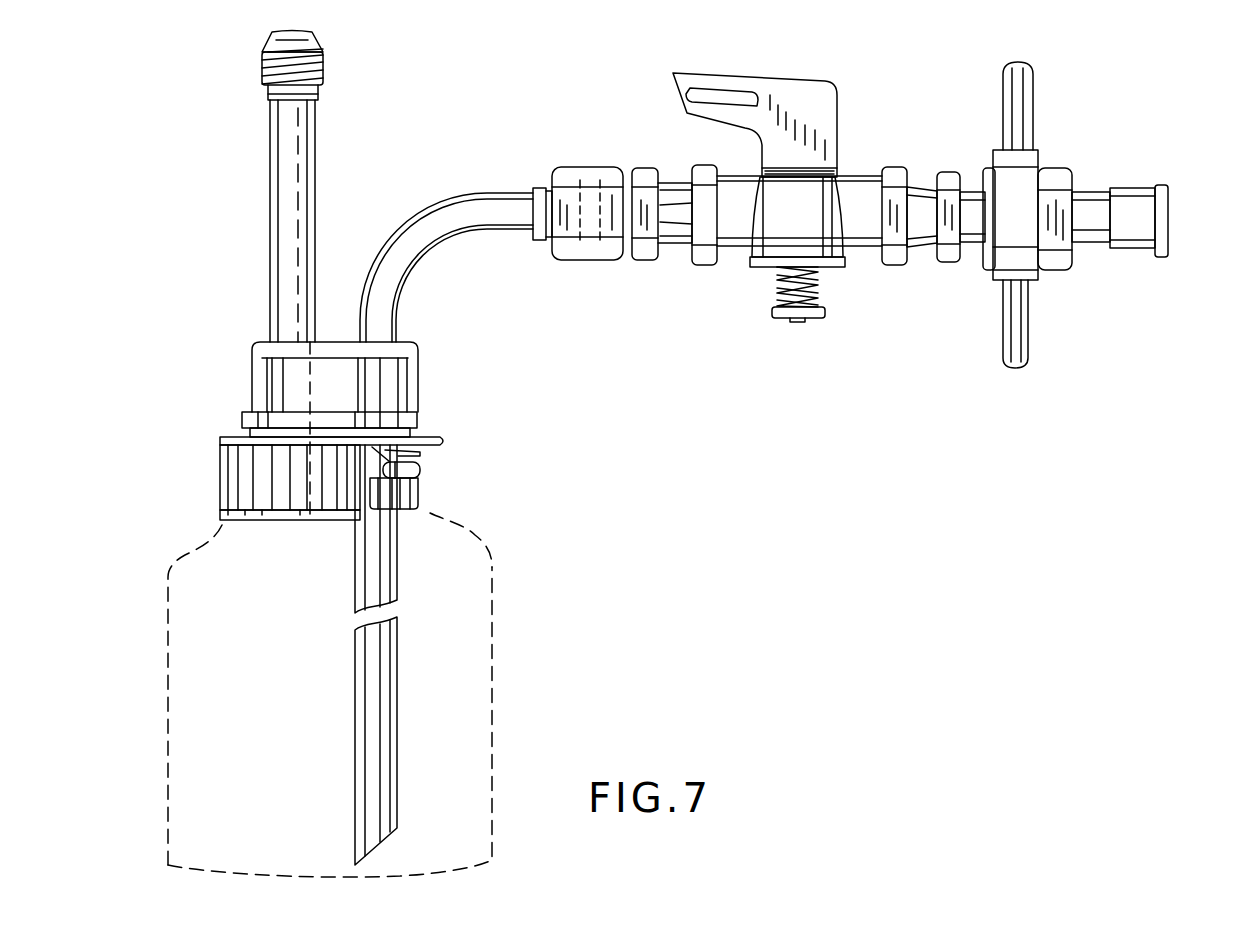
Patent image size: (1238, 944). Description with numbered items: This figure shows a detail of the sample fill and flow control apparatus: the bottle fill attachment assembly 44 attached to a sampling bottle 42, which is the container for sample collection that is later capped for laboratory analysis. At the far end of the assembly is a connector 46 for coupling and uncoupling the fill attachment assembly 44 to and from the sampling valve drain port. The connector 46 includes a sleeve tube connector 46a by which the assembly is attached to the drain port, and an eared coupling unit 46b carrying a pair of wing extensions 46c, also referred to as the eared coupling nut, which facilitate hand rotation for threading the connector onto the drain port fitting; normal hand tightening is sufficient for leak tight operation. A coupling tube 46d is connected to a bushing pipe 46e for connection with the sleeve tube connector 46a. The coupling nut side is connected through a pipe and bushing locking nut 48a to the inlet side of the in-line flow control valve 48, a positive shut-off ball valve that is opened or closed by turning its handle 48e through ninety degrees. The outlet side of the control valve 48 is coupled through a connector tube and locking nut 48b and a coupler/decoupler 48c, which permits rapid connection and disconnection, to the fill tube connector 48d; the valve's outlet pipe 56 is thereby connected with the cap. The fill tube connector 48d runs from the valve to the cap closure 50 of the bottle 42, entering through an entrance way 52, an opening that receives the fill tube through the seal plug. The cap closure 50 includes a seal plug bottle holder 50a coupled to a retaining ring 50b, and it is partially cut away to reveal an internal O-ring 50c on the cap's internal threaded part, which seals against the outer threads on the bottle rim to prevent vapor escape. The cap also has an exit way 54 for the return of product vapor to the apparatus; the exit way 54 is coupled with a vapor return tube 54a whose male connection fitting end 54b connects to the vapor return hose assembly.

The sampling bottle 42 is at (493, 665).
The fill attachment assembly 44 is at (661, 152).
The connector 46 is at (1130, 197).
The sleeve tube connector 46a is at (1085, 195).
The eared coupling unit 46b is at (1040, 275).
The wing extensions 46c is at (1012, 325).
The coupling tube 46d is at (975, 185).
The bushing pipe 46e is at (948, 255).
The flow control valve 48 is at (850, 157).
The pipe and bushing locking nut 48a is at (895, 255).
The connector tube and locking nut 48b is at (655, 258).
The coupler/decoupler 48c is at (590, 167).
The fill tube connector 48d is at (383, 300).
The handle 48e is at (793, 100).
The cap closure 50 is at (232, 487).
The seal plug bottle holder 50a is at (263, 373).
The retaining ring 50b is at (247, 415).
The O-ring 50c is at (423, 470).
The entrance way 52 is at (398, 345).
The exit way 54 is at (324, 326).
The vapor return tube 54a is at (280, 198).
The male connection fitting end 54b is at (325, 73).
The outlet pipe 56 is at (450, 213).